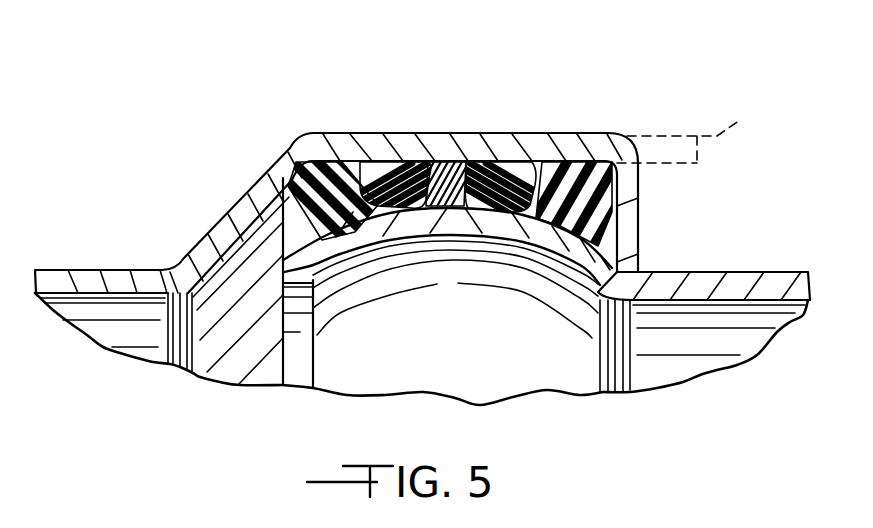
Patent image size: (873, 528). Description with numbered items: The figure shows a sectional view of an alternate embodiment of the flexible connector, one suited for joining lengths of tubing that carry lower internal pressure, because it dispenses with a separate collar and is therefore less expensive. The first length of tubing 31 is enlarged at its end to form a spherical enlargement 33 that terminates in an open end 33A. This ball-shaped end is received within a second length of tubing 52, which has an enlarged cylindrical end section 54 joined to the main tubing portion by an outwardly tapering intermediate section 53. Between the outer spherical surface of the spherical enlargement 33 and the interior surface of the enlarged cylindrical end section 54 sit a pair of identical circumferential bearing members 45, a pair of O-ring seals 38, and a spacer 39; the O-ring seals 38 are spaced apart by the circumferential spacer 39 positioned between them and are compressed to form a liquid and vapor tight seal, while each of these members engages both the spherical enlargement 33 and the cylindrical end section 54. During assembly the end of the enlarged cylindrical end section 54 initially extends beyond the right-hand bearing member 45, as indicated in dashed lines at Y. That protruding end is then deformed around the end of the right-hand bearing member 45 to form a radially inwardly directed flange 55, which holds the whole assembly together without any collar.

The first length of tubing 31 is at (742, 285).
The spherical enlargement 33 is at (450, 218).
The open end 33A is at (296, 373).
The O-ring seals 38 is at (377, 160).
The spacer 39 is at (467, 155).
The bearing members 45 is at (307, 177).
The second length of tubing 52 is at (85, 282).
The intermediate section 53 is at (208, 240).
The enlarged cylindrical end section 54 is at (440, 150).
The radially inwardly directed flange 55 is at (643, 183).
The dashed-line end position Y is at (691, 134).